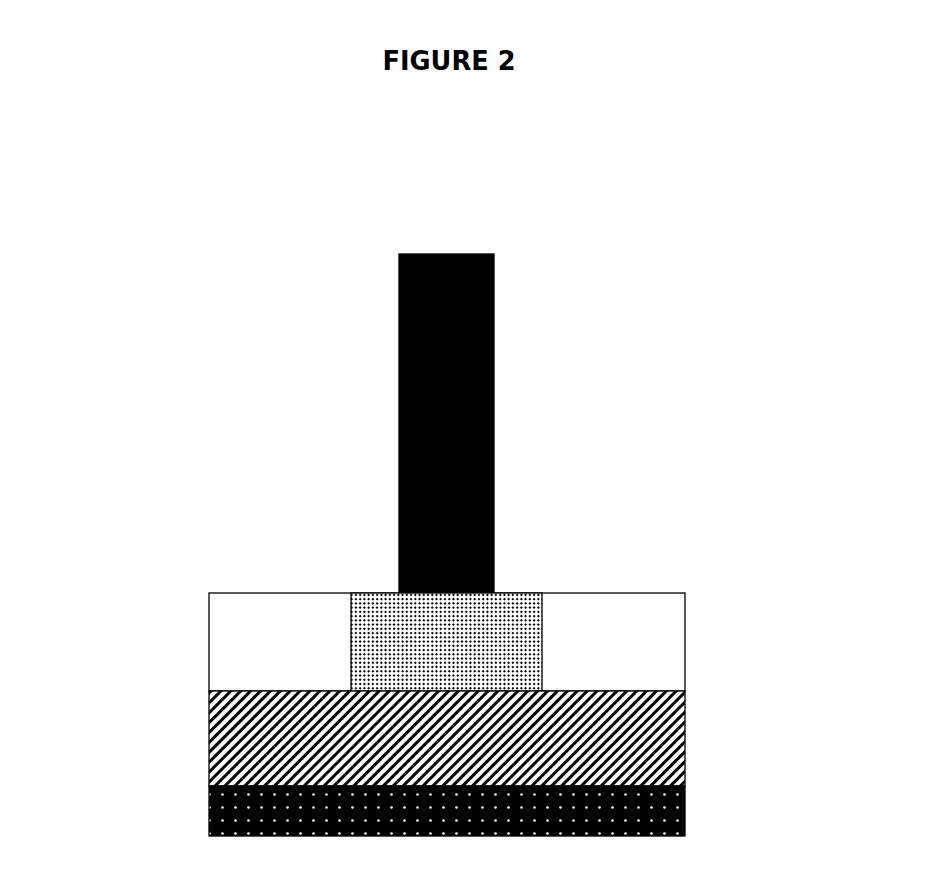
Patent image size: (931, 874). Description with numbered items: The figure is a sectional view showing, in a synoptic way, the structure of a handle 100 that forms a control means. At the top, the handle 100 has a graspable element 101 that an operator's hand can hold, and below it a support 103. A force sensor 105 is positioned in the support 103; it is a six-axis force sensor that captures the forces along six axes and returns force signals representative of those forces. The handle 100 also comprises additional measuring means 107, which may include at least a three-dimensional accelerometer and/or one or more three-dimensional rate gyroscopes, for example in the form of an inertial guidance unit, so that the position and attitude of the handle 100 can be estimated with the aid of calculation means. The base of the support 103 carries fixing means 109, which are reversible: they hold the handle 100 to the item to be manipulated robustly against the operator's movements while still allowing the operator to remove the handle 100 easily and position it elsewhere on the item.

The handle 100 is at (535, 217).
The graspable element 101 is at (487, 432).
The support 103 is at (178, 645).
The force sensor 105 is at (523, 600).
The additional measuring means 107 is at (201, 737).
The fixing means 109 is at (677, 805).